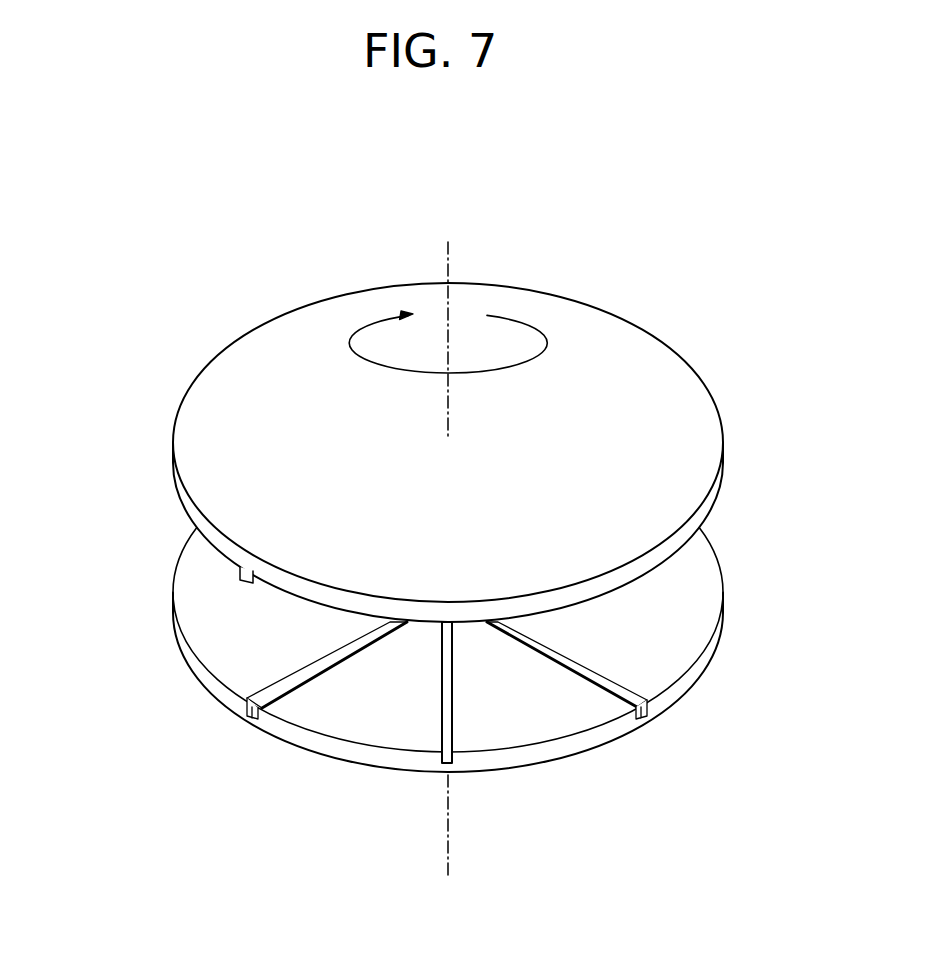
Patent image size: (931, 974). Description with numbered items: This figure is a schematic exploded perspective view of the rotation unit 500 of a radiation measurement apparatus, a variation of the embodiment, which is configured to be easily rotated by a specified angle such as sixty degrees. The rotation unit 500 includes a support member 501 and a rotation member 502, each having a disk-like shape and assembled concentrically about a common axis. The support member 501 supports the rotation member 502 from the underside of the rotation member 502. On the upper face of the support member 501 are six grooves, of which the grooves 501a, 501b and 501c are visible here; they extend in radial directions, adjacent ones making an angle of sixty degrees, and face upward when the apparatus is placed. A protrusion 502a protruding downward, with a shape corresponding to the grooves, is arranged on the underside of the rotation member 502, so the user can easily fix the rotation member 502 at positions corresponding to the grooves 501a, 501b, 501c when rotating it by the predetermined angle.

The rotation unit 500 is at (427, 535).
The support member 501 is at (228, 648).
The groove 501a is at (278, 690).
The groove 501b is at (447, 735).
The groove 501c is at (620, 686).
The rotation member 502 is at (225, 422).
The protrusion 502a is at (243, 572).